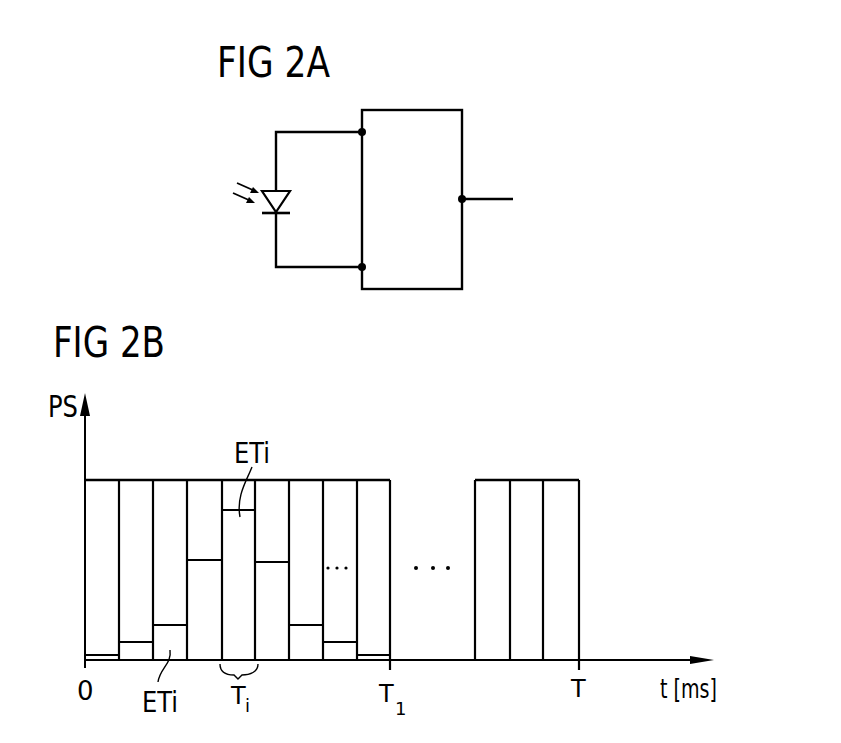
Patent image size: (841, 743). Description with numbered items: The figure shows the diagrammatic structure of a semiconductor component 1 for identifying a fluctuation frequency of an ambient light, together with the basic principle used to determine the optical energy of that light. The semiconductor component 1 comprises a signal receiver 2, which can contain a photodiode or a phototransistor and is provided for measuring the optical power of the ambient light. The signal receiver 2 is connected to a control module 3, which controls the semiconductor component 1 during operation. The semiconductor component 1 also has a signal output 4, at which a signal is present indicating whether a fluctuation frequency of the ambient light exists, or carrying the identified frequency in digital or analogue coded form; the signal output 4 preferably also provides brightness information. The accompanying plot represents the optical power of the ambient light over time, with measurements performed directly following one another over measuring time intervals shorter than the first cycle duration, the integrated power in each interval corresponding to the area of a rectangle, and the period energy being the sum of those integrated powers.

The semiconductor component 1 is at (506, 106).
The signal receiver 2 is at (283, 200).
The control module 3 is at (412, 289).
The signal output 4 is at (487, 196).